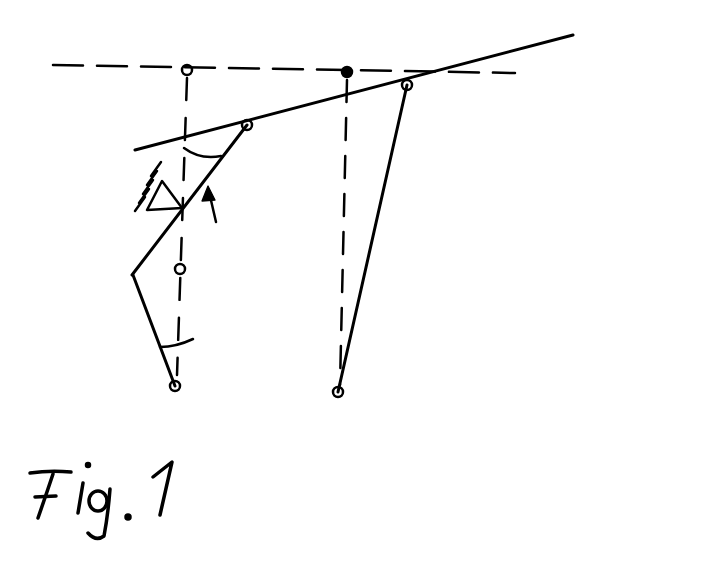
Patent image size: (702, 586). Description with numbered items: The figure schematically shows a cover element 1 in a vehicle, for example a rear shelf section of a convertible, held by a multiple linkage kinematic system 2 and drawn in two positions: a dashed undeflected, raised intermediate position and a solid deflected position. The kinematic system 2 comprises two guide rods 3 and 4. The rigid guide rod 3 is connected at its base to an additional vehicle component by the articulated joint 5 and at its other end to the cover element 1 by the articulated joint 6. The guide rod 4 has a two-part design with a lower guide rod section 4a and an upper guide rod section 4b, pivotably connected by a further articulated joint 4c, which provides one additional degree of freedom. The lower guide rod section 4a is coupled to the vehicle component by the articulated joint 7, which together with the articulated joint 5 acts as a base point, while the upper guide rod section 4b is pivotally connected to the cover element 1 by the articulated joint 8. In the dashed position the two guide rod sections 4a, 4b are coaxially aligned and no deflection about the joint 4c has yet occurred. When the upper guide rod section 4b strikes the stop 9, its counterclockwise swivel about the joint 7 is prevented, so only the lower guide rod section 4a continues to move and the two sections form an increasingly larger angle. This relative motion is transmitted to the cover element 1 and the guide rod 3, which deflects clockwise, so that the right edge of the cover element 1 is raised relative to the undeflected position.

The cover element 1 is at (493, 55).
The multiple linkage kinematic system 2 is at (388, 280).
The guide rod 3 is at (343, 178).
The guide rod 4 is at (189, 240).
The lower guide rod section 4a is at (178, 321).
The upper guide rod section 4b is at (222, 158).
The articulated joint 4c is at (138, 277).
The articulated joint 5 is at (345, 394).
The articulated joint 6 is at (346, 66).
The articulated joint 7 is at (180, 390).
The articulated joint 8 is at (192, 73).
The stop 9 is at (158, 209).